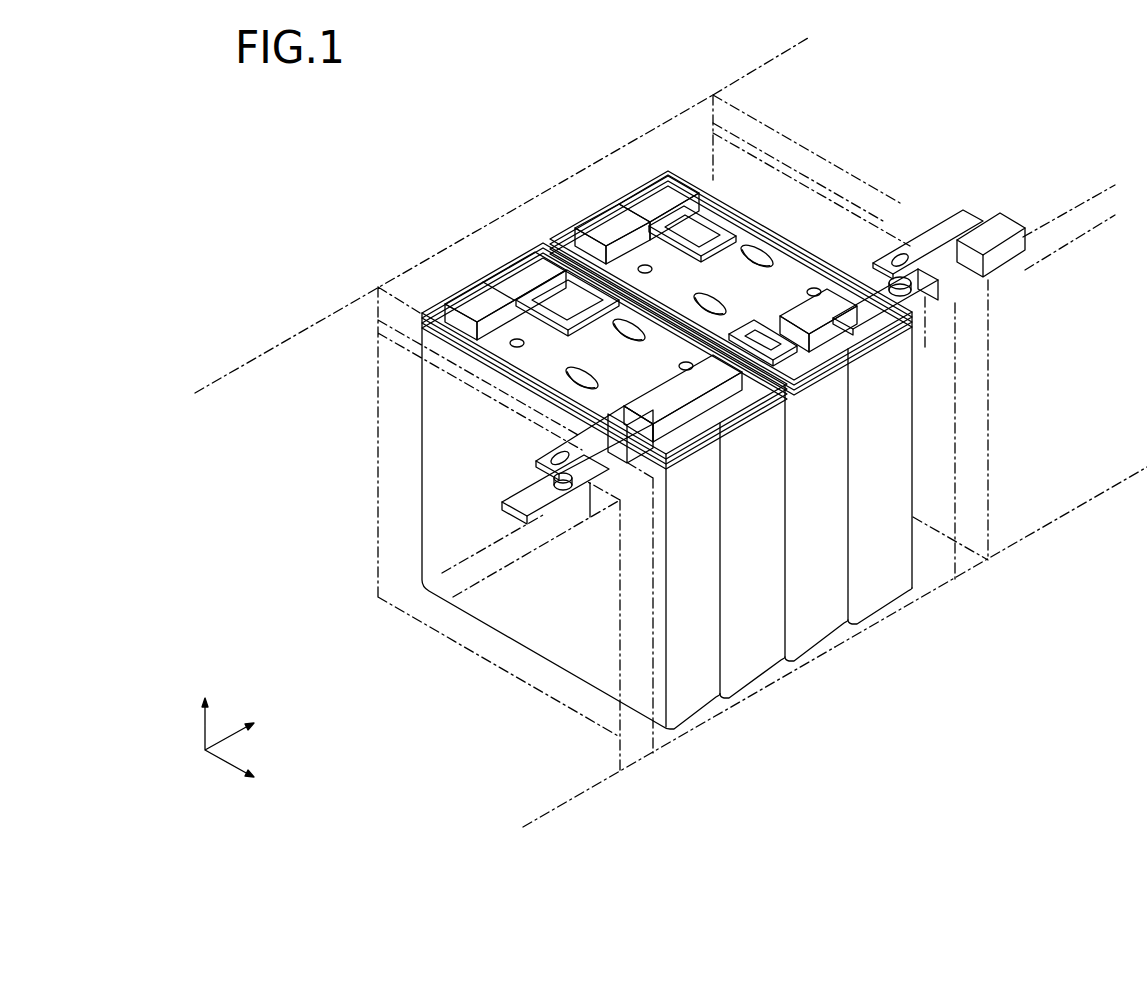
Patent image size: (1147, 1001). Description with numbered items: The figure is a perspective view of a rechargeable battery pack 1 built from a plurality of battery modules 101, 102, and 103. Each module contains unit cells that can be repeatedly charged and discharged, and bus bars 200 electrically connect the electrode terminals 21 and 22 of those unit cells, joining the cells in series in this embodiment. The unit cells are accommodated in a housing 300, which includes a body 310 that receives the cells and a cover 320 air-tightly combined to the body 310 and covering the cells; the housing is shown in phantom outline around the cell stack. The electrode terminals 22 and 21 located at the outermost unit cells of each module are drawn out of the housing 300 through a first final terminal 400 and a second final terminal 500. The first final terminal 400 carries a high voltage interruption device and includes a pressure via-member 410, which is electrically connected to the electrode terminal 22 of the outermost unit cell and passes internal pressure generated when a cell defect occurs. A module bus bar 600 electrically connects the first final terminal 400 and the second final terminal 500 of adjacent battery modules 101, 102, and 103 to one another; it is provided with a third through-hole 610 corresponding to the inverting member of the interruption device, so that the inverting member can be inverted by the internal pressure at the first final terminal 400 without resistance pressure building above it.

The rechargeable battery pack 1 is at (500, 81).
The electrode terminal 21 is at (645, 178).
The electrode terminal 22 is at (582, 217).
The battery module 101 is at (612, 792).
The battery module 102 is at (798, 694).
The battery module 103 is at (1072, 534).
The bus bar 200 is at (520, 270).
The housing 300 is at (323, 198).
The body 310 is at (376, 358).
The cover 320 is at (416, 272).
The first final terminal 400 is at (933, 277).
The pressure via-member 410 is at (858, 307).
The second final terminal 500 is at (977, 250).
The module bus bar 600 is at (958, 228).
The third through-hole 610 is at (900, 255).